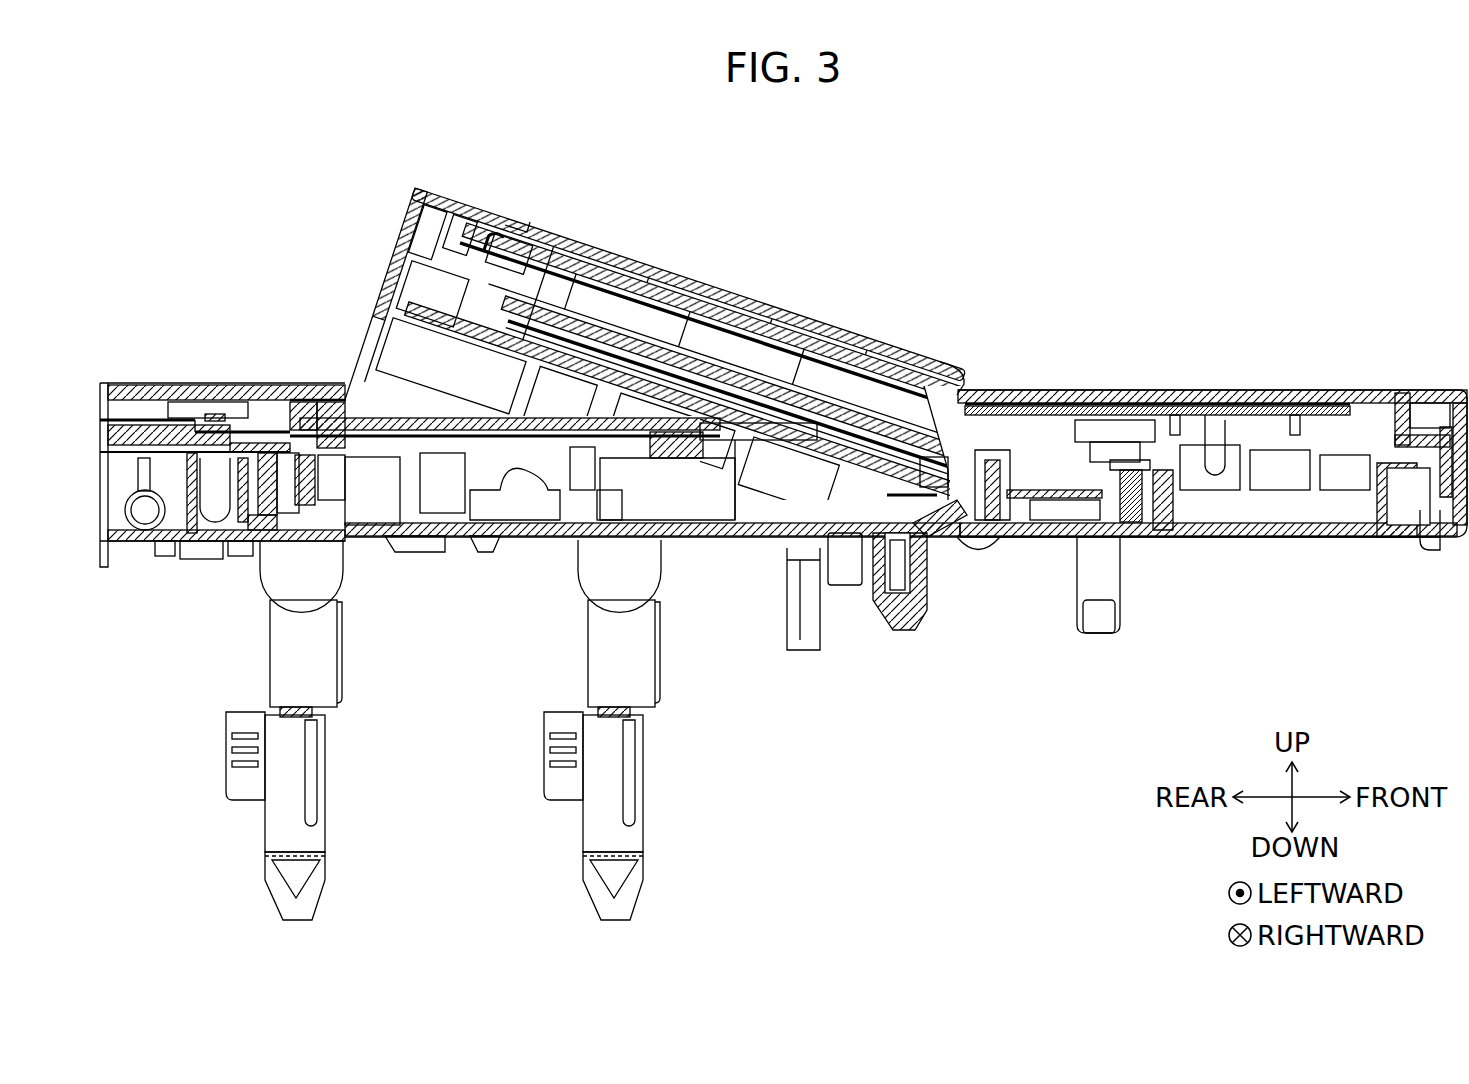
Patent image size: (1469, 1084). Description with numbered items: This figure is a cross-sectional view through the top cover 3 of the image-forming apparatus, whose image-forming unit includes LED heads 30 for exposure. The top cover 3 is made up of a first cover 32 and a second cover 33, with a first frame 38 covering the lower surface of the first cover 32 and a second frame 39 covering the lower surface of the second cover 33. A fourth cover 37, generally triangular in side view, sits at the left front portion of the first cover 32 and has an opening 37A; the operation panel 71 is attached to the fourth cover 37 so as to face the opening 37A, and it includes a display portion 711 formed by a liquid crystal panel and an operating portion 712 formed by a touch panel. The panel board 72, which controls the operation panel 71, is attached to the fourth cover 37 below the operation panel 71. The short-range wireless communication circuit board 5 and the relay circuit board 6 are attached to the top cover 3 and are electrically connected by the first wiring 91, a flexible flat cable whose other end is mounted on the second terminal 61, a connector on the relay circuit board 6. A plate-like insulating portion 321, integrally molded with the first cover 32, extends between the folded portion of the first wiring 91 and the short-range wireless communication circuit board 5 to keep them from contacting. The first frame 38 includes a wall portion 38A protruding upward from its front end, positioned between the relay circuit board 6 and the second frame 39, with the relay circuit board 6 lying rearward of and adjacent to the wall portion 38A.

The top cover 3 is at (178, 383).
The LED heads 30 is at (318, 905).
The first cover 32 is at (262, 398).
The insulating portion 321 is at (1113, 437).
The second cover 33 is at (1422, 395).
The fourth cover 37 is at (680, 355).
The opening 37A is at (517, 232).
The first frame 38 is at (745, 548).
The wall portion 38A is at (1165, 482).
The second frame 39 is at (1335, 540).
The short-range wireless communication circuit board 5 is at (1182, 410).
The relay circuit board 6 is at (1073, 507).
The second terminal 61 is at (1088, 517).
The operation panel 71 is at (657, 278).
The display portion 711 is at (585, 255).
The operating portion 712 is at (583, 262).
The panel board 72 is at (703, 355).
The first wiring 91 is at (1128, 492).